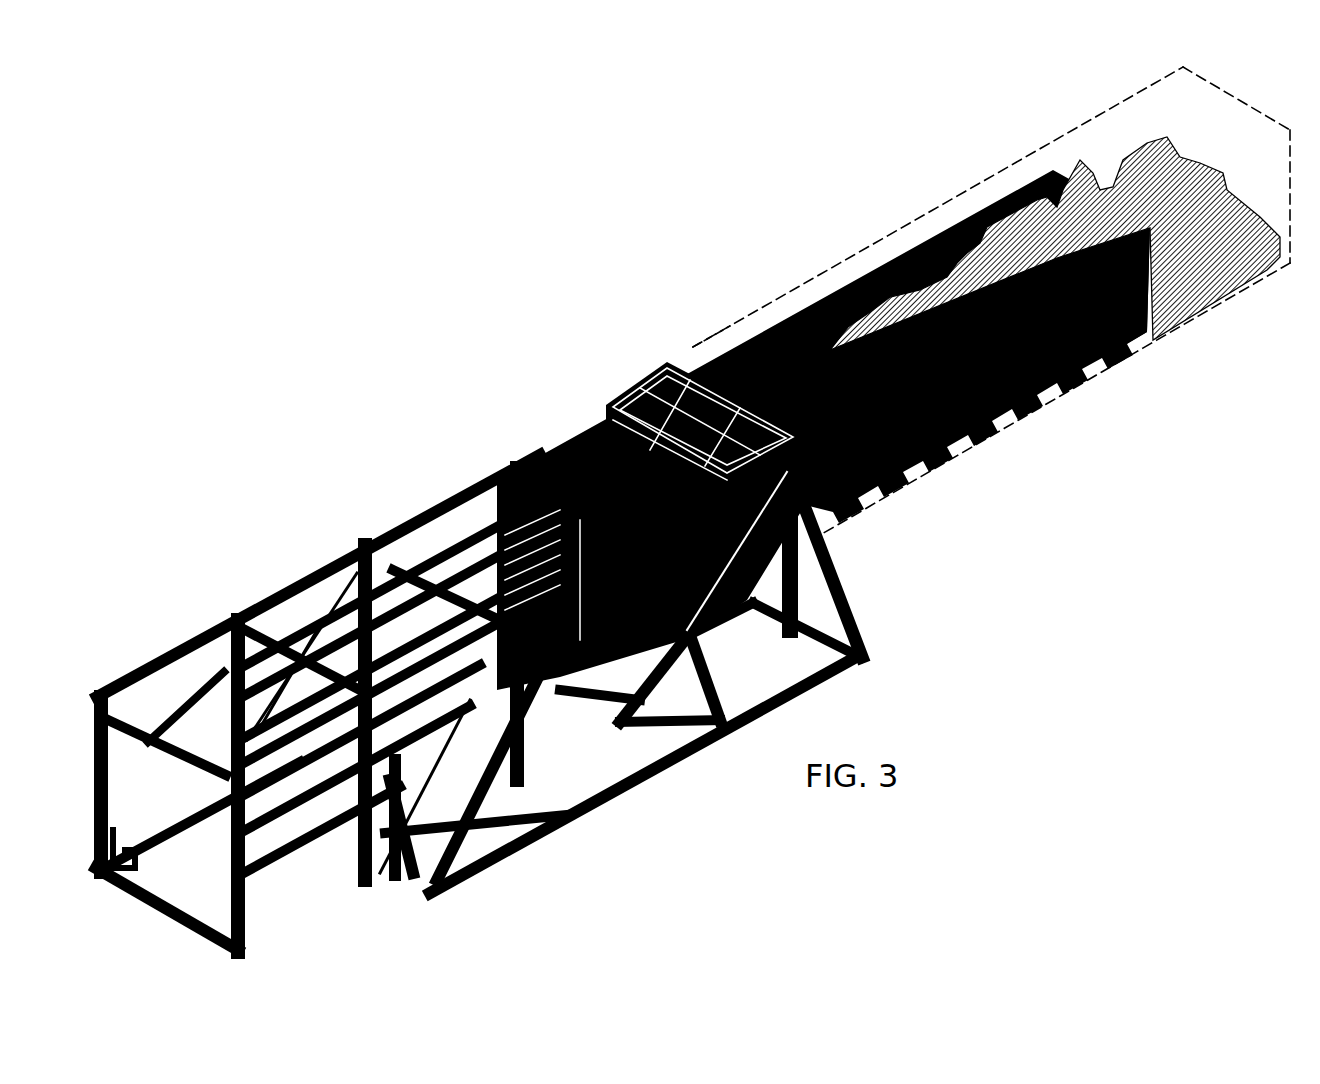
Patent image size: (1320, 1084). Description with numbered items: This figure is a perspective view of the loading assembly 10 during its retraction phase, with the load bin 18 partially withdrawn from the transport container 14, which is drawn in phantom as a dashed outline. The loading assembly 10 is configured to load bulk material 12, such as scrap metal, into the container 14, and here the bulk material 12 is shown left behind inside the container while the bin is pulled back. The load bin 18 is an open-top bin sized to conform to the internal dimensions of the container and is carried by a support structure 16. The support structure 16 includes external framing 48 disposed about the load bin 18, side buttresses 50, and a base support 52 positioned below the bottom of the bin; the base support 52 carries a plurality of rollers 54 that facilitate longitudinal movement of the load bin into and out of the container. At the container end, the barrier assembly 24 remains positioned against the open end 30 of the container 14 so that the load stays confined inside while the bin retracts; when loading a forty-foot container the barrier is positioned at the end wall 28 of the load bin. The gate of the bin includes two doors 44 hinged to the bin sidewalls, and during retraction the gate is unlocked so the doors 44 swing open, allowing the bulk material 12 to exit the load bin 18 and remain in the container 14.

The loading assembly 10 is at (693, 509).
The bulk material 12 is at (1200, 313).
The transport container 14 is at (1072, 397).
The support structure 16 is at (657, 777).
The load bin 18 is at (907, 460).
The barrier assembly 24 is at (723, 358).
The end wall 28 is at (493, 475).
The open end 30 is at (693, 347).
The doors 44 is at (1120, 340).
The external framing 48 is at (153, 672).
The side buttresses 50 is at (567, 823).
The base support 52 is at (553, 677).
The rollers 54 is at (333, 848).